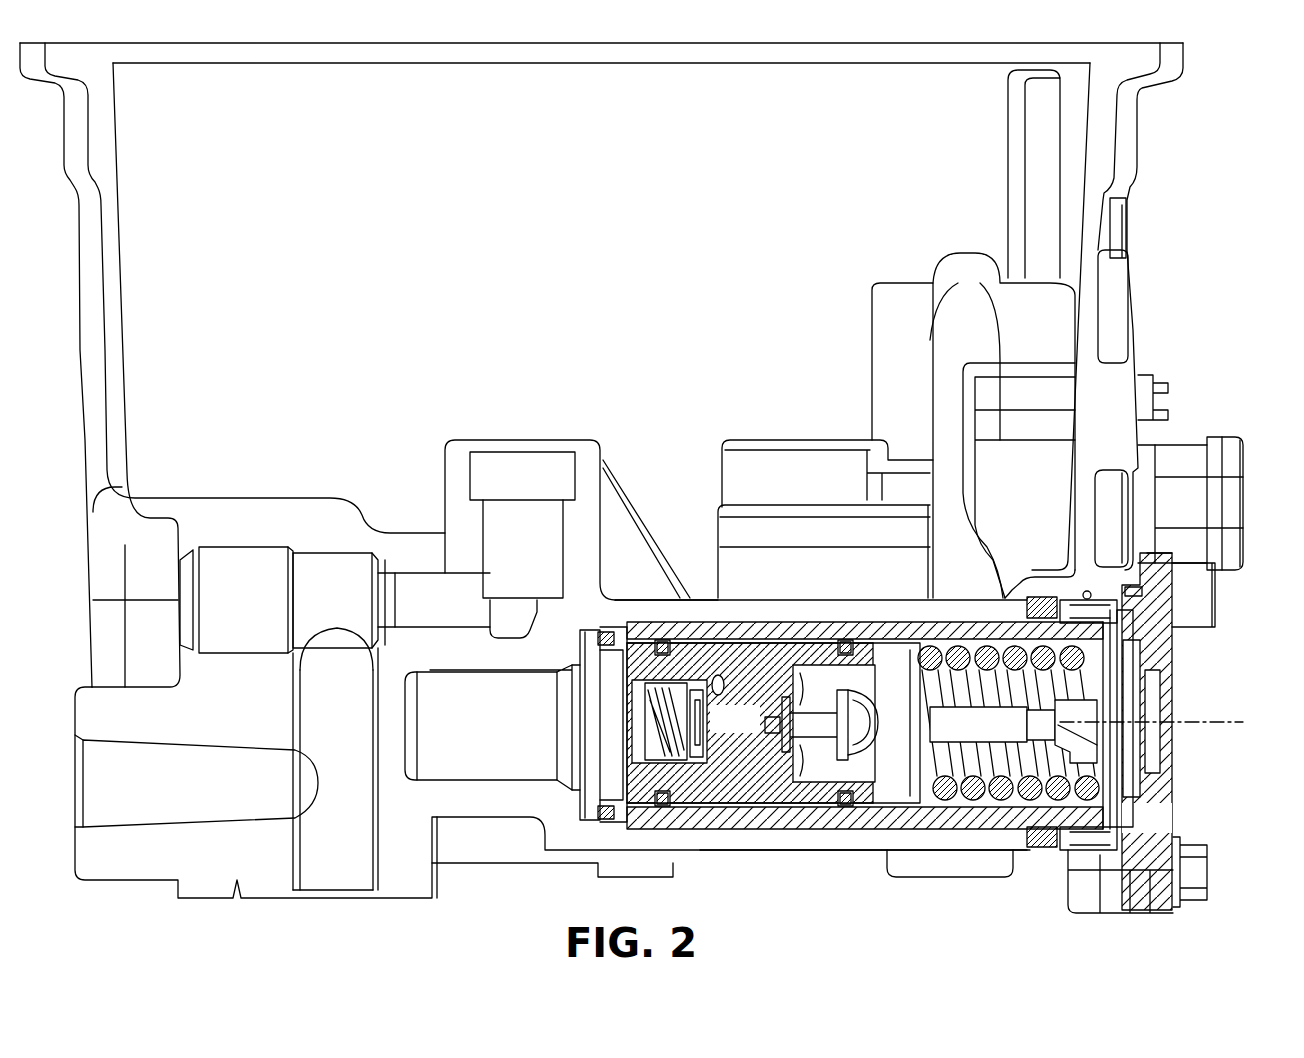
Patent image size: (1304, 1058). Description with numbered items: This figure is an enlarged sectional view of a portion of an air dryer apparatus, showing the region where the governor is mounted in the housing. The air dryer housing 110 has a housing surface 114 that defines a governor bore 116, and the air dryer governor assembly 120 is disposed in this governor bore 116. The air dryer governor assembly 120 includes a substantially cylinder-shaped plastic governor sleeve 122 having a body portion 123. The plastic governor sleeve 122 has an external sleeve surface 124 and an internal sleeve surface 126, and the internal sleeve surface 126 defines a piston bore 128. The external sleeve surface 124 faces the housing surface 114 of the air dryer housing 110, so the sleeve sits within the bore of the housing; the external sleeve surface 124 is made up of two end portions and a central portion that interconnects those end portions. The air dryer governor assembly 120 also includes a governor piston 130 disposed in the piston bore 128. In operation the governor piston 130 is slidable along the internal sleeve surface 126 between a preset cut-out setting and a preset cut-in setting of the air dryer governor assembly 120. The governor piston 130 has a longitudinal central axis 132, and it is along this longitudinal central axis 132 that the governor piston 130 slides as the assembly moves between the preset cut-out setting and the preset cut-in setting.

The air dryer housing 110 is at (631, 503).
The housing surface 114 is at (703, 633).
The governor bore 116 is at (1170, 831).
The air dryer governor assembly 120 is at (932, 719).
The plastic governor sleeve 122 is at (855, 835).
The body portion 123 is at (825, 630).
The external sleeve surface 124 is at (650, 625).
The internal sleeve surface 126 is at (740, 657).
The piston bore 128 is at (713, 731).
The governor piston 130 is at (752, 780).
The longitudinal central axis 132 is at (1205, 720).